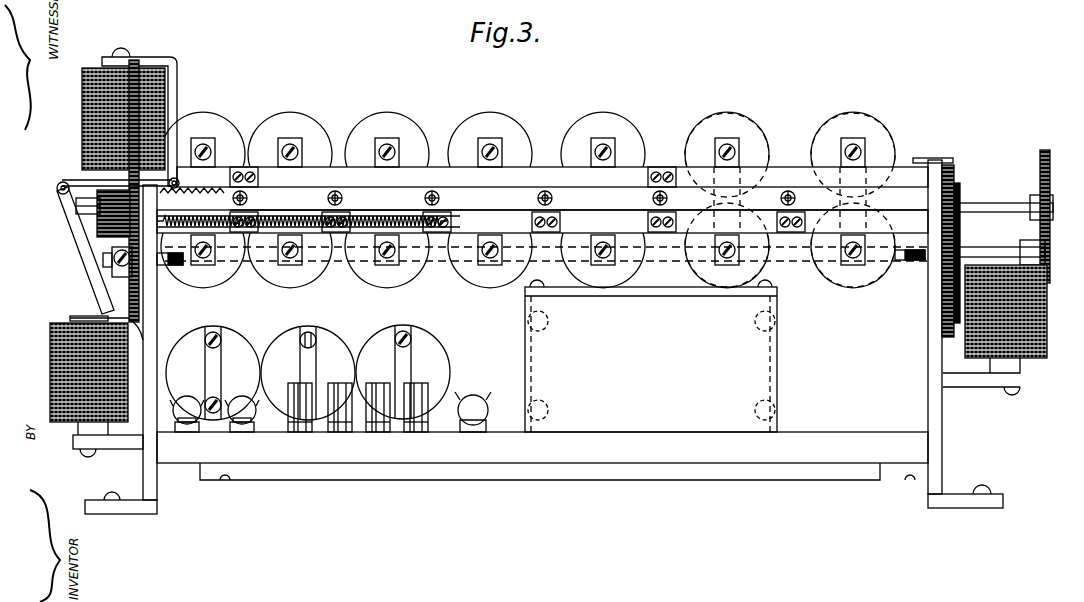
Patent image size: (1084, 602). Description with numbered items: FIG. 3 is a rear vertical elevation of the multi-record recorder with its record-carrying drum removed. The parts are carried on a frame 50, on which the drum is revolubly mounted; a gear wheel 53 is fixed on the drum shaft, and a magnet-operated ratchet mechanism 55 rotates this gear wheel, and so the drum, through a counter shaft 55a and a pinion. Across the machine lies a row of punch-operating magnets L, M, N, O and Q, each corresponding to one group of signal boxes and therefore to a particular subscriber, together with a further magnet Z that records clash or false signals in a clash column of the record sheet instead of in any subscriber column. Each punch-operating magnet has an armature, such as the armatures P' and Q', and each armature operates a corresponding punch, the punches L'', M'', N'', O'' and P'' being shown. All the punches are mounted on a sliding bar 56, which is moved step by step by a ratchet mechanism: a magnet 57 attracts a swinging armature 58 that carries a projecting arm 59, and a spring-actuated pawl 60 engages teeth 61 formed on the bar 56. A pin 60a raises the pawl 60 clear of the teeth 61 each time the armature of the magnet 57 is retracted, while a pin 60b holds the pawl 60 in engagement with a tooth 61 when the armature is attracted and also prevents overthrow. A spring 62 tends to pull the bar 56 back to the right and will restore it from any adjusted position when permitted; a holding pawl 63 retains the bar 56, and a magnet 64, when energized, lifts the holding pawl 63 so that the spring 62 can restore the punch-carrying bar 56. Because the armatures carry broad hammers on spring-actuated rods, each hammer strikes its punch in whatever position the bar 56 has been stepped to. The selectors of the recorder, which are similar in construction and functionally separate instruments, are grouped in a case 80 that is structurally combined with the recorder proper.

The frame 50 is at (152, 478).
The gear wheel 53 is at (168, 115).
The magnet-operated ratchet mechanism 55 is at (1026, 358).
The counter shaft 55a is at (104, 259).
The sliding bar 56 is at (515, 192).
The magnet 57 is at (50, 366).
The swinging armature 58 is at (86, 316).
The projecting arm 59 is at (80, 238).
The spring-actuated pawl 60 is at (88, 184).
The pin 60a is at (76, 206).
The pin 60b is at (100, 180).
The teeth 61 is at (210, 186).
The spring 62 is at (310, 236).
The holding pawl 63 is at (192, 183).
The magnet 64 is at (82, 108).
The case 80 is at (651, 356).
The punch-operating magnet L is at (203, 192).
The punch-operating magnet M is at (290, 192).
The punch-operating magnet N is at (387, 192).
The punch-operating magnet O is at (491, 192).
The armature P' is at (606, 190).
The punch-operating magnet Q is at (727, 190).
The magnet Z is at (880, 128).
The punch L'' is at (255, 200).
The punch M'' is at (349, 200).
The punch N'' is at (445, 200).
The punch O'' is at (558, 200).
The punch P'' is at (677, 199).
The armature Q' is at (801, 199).